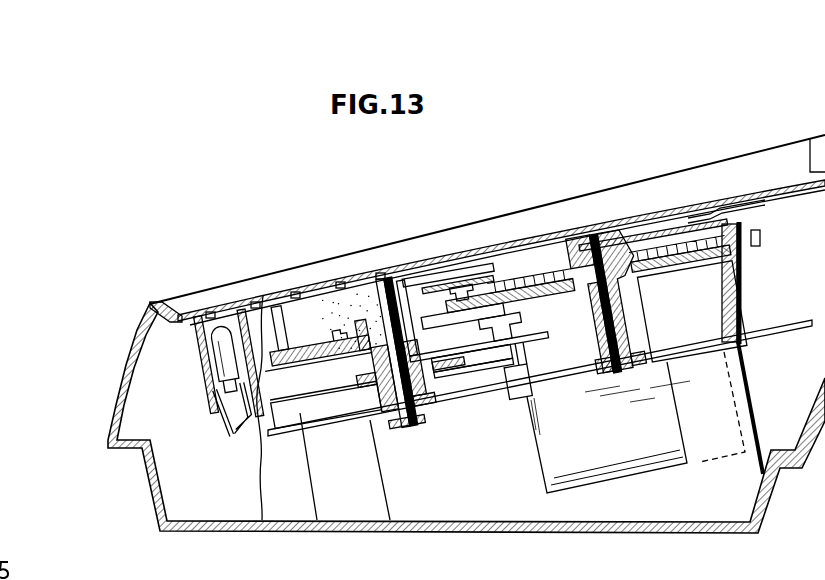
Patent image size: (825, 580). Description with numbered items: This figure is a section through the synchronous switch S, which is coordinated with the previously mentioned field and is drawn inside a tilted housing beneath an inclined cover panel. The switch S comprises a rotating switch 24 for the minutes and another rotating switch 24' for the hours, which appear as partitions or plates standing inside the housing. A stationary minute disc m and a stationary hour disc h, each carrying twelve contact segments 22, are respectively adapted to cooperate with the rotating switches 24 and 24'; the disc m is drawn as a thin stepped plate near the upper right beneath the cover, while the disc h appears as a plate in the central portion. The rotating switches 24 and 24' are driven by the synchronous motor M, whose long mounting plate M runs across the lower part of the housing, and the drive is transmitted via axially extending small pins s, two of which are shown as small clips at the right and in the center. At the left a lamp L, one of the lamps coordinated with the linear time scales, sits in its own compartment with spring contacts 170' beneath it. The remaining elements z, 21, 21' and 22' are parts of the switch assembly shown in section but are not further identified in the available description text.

The synchronous switch S is at (362, 250).
The panel strip z is at (522, 241).
The contact segments 22 is at (448, 248).
The support block 21 is at (474, 245).
The stationary minute disc m is at (762, 211).
The axially extending small pins s is at (336, 344).
The rotating switch for the minutes 24 is at (768, 283).
The rotating switch for the hours 24' is at (319, 337).
The lamp L is at (216, 343).
The lamp contact spring 170' is at (204, 414).
The pedestal 21' is at (526, 327).
The stationary hour disc h is at (547, 338).
The block 22' is at (481, 376).
The synchronous motor M is at (744, 352).